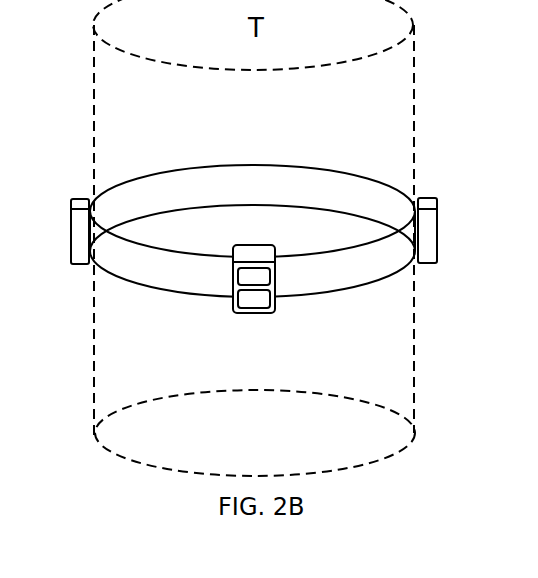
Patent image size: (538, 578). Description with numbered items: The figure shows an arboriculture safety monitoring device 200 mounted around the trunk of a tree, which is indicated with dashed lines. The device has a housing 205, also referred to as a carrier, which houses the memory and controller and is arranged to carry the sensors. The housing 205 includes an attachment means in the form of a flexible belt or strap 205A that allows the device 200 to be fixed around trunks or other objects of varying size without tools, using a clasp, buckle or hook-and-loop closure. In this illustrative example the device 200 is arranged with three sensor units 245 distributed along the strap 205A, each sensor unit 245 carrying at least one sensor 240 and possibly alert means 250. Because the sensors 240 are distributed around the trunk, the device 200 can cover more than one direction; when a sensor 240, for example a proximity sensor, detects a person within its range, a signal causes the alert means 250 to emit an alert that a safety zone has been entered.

The arboriculture safety monitoring device 200 is at (273, 249).
The housing 205 is at (397, 278).
The strap 205A is at (343, 265).
The sensor 240 is at (257, 302).
The sensor unit 245 is at (72, 265).
The alert means 250 is at (237, 277).